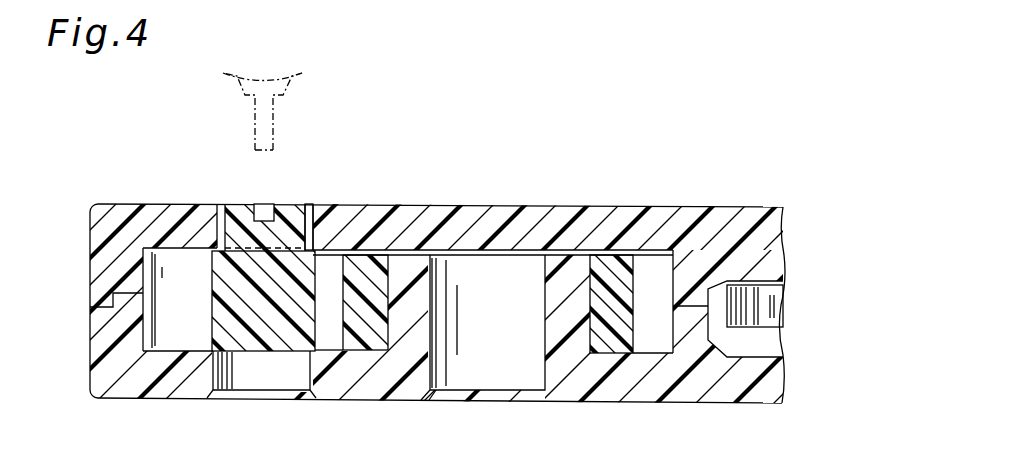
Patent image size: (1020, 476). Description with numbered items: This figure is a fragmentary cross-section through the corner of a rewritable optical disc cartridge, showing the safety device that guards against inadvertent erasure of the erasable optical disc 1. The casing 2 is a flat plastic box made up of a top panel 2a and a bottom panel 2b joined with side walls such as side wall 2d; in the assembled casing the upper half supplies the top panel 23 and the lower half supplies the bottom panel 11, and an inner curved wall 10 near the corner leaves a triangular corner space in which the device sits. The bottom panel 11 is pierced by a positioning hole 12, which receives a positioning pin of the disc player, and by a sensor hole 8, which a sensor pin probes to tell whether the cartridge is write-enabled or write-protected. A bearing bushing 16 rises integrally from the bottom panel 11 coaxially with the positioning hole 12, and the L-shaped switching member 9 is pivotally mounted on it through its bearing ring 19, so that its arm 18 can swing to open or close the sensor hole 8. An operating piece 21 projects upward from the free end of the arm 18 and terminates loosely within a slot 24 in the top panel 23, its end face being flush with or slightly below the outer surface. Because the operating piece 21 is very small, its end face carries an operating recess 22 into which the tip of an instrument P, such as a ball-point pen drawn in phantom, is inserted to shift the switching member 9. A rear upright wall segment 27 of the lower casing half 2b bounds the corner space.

The erasable optical disc 1 is at (768, 310).
The casing 2 is at (722, 203).
The top panel 2a is at (130, 212).
The bottom panel 2b is at (123, 392).
The side wall 2d is at (110, 262).
The sensor hole 8 is at (293, 380).
The switching member 9 is at (199, 306).
The inner curved wall 10 is at (672, 327).
The bottom panel 11 is at (362, 390).
The positioning hole 12 is at (493, 377).
The bearing bushing 16 is at (406, 267).
The arm 18 is at (256, 348).
The bearing ring 19 is at (613, 338).
The operating piece 21 is at (237, 209).
The operating recess 22 is at (262, 206).
The top panel 23 is at (513, 211).
The slot 24 is at (301, 219).
The rear upright wall segment 27 is at (100, 333).
The instrument P is at (273, 107).